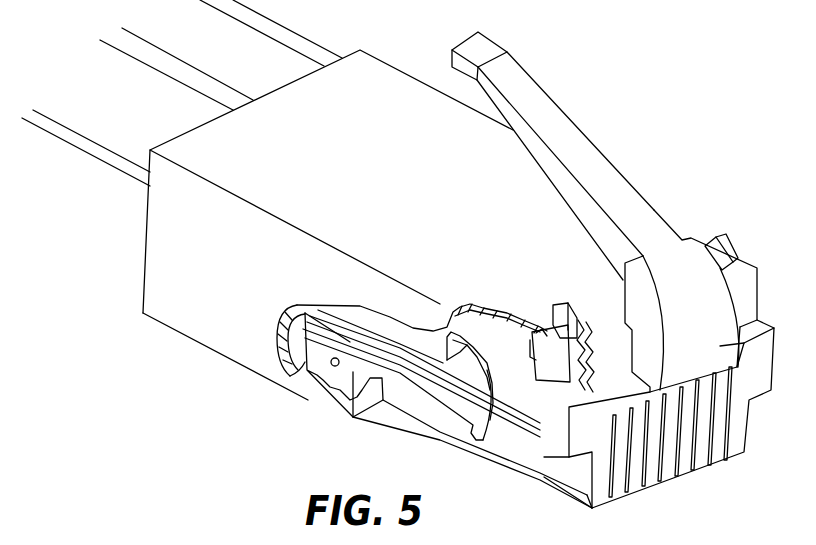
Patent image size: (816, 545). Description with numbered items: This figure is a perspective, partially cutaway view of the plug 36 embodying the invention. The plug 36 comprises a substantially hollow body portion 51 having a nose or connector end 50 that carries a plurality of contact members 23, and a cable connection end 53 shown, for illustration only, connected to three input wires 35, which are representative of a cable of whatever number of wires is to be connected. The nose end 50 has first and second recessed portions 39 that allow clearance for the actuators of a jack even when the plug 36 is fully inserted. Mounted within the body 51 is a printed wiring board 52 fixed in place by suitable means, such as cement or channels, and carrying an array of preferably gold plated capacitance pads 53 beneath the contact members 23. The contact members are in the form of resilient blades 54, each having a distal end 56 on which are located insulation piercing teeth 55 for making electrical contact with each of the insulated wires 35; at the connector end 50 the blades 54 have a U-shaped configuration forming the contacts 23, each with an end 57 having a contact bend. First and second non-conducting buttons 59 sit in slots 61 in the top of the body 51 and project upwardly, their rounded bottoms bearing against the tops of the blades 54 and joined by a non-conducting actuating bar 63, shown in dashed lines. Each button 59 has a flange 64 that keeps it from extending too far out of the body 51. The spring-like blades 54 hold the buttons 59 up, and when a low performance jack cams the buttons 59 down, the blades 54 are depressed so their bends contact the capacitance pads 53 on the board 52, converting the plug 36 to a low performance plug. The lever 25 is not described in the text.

The contact members 23 is at (724, 462).
The lever 25 is at (597, 147).
The input wires 35 is at (207, 2).
The plug 36 is at (285, 107).
The recessed portions 39 is at (761, 403).
The nose or connector end 50 is at (751, 432).
The body portion 51 is at (352, 407).
The printed wiring board 52 is at (437, 350).
The cable connection end / capacitance pads 53 is at (447, 350).
The blades 54 is at (523, 448).
The insulation piercing teeth 55 is at (290, 376).
The distal end 56 is at (320, 313).
The end 57 is at (498, 425).
The buttons 59 is at (563, 320).
The slots 61 is at (545, 323).
The actuating bar 63 is at (594, 351).
The flange 64 is at (540, 332).